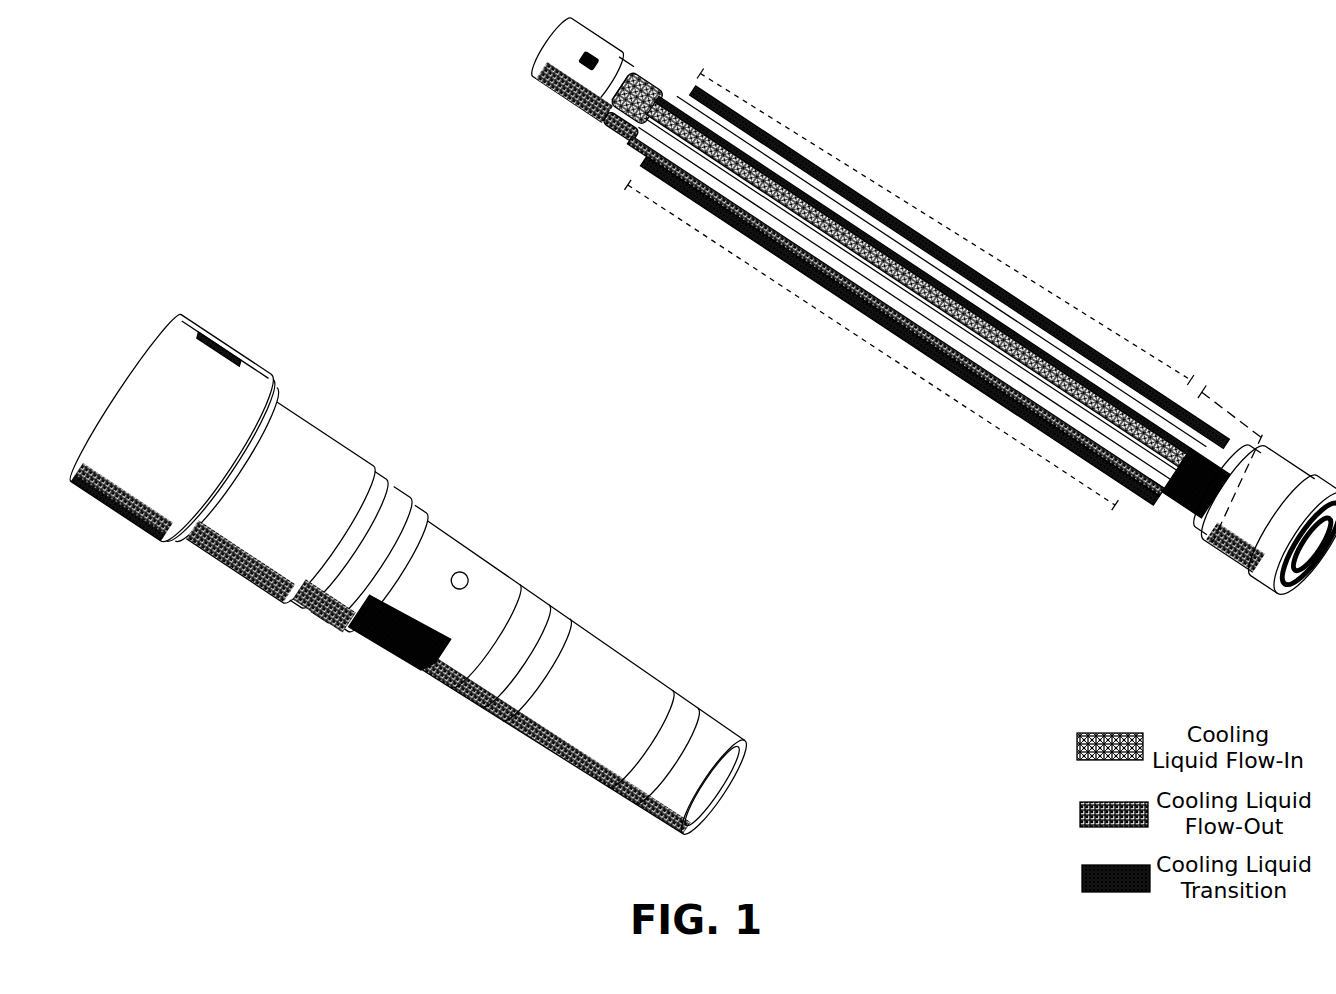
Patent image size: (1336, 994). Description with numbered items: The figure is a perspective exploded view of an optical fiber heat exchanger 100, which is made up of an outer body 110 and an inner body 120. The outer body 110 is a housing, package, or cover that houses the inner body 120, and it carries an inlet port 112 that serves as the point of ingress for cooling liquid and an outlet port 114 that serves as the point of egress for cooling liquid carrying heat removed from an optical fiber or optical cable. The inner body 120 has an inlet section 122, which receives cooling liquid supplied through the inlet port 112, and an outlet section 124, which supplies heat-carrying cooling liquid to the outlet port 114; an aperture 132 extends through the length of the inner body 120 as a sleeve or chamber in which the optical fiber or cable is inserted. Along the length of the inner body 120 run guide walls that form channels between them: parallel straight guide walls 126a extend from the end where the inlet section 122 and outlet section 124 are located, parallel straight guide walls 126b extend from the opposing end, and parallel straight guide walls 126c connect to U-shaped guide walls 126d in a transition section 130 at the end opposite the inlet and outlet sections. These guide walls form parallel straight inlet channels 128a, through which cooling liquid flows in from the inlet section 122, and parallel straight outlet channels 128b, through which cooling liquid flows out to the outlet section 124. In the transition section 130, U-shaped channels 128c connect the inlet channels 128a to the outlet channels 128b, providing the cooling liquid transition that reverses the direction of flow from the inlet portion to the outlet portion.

The optical fiber heat exchanger 100 is at (172, 45).
The outer body 110 is at (582, 526).
The inlet port 112 is at (234, 336).
The outlet port 114 is at (110, 522).
The inner body 120 is at (940, 184).
The inlet section 122 is at (674, 72).
The outlet section 124 is at (622, 142).
The parallel straight guide walls 126a is at (1092, 420).
The parallel straight guide walls 126b is at (985, 282).
The parallel straight guide walls 126c is at (1102, 455).
The U-shaped guide walls 126d is at (1170, 492).
The parallel straight inlet channels 128a is at (1034, 356).
The parallel straight outlet channels 128b is at (938, 334).
The U-shaped channels 128c is at (1192, 490).
The transition section 130 is at (1218, 412).
The aperture 132 is at (543, 38).